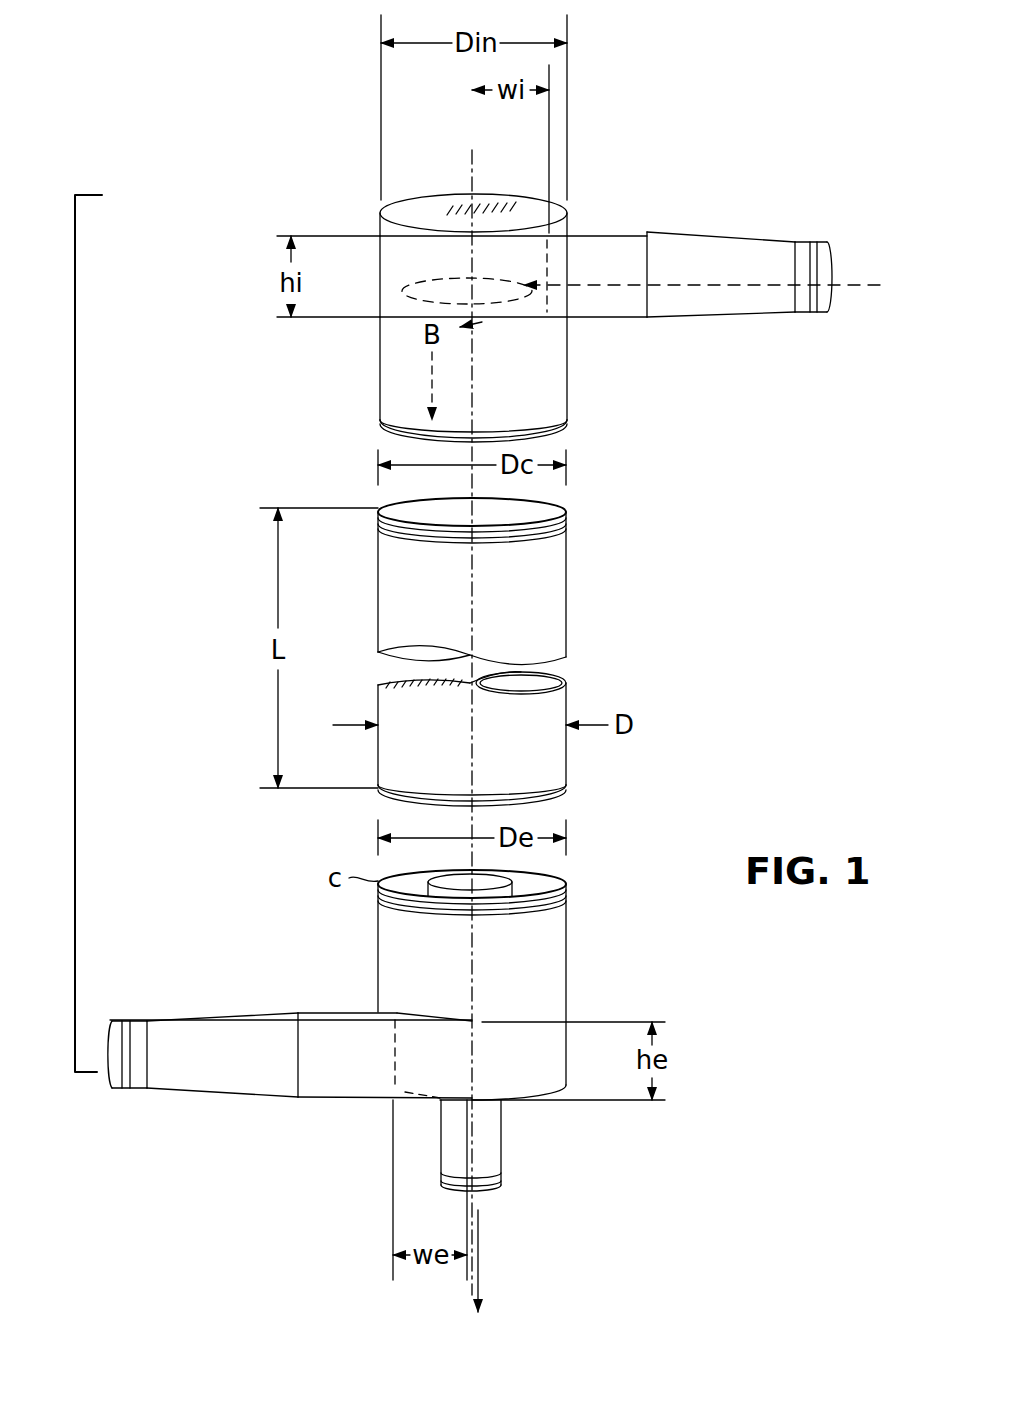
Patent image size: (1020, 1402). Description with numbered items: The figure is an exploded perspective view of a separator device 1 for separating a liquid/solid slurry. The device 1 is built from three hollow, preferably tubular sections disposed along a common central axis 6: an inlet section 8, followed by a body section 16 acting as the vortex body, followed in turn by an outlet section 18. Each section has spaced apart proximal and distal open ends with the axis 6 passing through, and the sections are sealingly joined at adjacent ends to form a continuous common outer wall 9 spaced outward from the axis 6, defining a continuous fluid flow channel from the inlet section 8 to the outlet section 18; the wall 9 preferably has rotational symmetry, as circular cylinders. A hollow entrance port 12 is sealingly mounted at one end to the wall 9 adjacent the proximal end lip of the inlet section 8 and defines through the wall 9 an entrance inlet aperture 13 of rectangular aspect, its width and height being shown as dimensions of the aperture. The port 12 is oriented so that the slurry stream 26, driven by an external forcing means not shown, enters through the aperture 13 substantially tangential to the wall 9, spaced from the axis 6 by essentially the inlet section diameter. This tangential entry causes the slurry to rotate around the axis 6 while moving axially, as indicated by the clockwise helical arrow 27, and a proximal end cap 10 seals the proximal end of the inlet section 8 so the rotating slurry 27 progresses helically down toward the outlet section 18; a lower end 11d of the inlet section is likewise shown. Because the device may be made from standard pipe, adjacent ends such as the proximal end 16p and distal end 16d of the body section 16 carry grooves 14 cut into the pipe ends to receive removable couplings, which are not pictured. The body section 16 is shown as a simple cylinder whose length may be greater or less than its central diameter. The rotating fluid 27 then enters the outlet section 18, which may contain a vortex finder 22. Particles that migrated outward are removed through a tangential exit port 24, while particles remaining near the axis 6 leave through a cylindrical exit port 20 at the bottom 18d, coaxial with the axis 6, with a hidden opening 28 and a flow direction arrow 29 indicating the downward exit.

The separator device 1 is at (71, 633).
The central axis 6 is at (468, 162).
The inlet section 8 is at (587, 294).
The outer wall 9 is at (380, 374).
The proximal end cap 10 is at (533, 207).
The lower end of inlet section 11d is at (380, 424).
The entrance port 12 is at (621, 244).
The entrance inlet aperture 13 is at (532, 258).
The grooves 14 is at (567, 421).
The body section 16 is at (554, 649).
The proximal end of body section 16p is at (566, 510).
The distal end of body section 16d is at (567, 793).
The outlet section 18 is at (542, 1035).
The bottom of outlet section 18d is at (522, 1112).
The cylindrical exit port 20 is at (500, 1160).
The vortex finder 22 is at (518, 875).
The tangential exit port 24 is at (290, 1050).
The inlet slurry stream 26 is at (825, 240).
The helical arrow 27 is at (492, 326).
The outlet hole 28 is at (422, 1082).
The flow direction 29 is at (501, 1267).